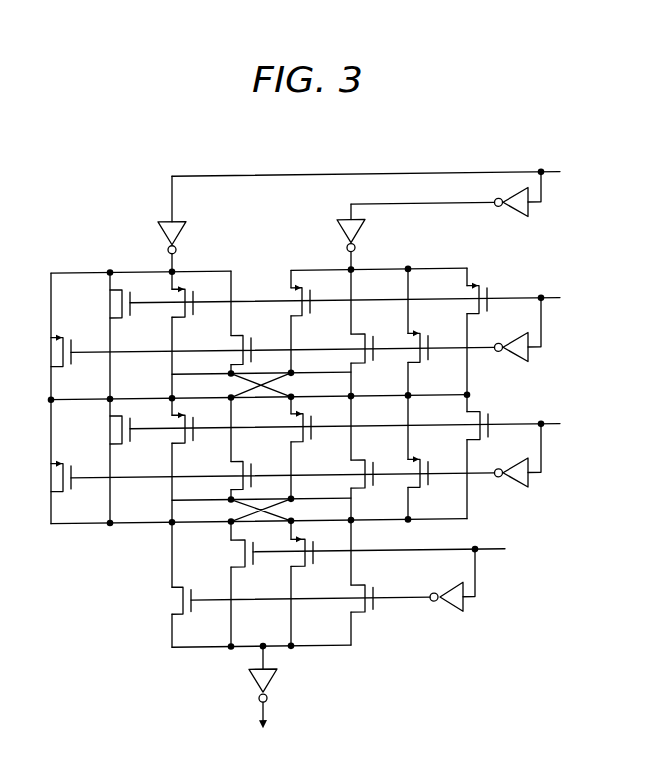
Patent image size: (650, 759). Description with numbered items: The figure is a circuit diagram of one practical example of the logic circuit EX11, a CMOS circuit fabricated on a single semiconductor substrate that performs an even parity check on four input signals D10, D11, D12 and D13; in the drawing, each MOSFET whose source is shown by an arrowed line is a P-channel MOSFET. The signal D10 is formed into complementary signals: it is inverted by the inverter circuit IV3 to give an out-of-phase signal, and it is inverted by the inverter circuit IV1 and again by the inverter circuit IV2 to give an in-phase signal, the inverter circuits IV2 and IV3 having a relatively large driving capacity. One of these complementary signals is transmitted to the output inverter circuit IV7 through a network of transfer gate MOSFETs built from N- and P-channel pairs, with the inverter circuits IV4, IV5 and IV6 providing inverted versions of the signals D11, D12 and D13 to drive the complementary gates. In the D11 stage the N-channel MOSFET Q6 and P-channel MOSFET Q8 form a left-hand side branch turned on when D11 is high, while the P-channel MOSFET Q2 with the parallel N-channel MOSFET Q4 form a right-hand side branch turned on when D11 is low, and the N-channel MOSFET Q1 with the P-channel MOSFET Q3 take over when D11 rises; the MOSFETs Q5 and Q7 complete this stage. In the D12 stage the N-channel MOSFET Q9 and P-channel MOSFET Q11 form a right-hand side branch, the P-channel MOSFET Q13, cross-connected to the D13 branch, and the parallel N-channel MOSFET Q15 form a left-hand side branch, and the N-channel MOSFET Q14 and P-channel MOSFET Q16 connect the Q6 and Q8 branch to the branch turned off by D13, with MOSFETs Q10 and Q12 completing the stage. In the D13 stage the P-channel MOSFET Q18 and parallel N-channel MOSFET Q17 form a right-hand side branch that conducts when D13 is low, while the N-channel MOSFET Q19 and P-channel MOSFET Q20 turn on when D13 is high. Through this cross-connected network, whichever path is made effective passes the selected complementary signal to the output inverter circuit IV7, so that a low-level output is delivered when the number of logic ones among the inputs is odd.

The N-channel MOSFET Q1 is at (492, 292).
The P-channel MOSFET Q2 is at (316, 294).
The P-channel MOSFET Q3 is at (433, 342).
The N-channel MOSFET Q4 is at (346, 342).
The MOSFET Q5 is at (197, 295).
The N-channel MOSFET Q6 is at (106, 305).
The MOSFET Q7 is at (256, 343).
The P-channel MOSFET Q8 is at (46, 350).
The N-channel MOSFET Q9 is at (463, 417).
The MOSFET Q10 is at (282, 420).
The P-channel MOSFET Q11 is at (435, 466).
The MOSFET Q12 is at (345, 466).
The P-channel MOSFET Q13 is at (200, 421).
The N-channel MOSFET Q14 is at (103, 430).
The N-channel MOSFET Q15 is at (259, 468).
The P-channel MOSFET Q16 is at (44, 476).
The N-channel MOSFET Q17 is at (381, 589).
The P-channel MOSFET Q18 is at (320, 546).
The N-channel MOSFET Q19 is at (226, 553).
The P-channel MOSFET Q20 is at (164, 601).
The inverter circuit IV1 is at (446, 208).
The inverter circuit IV2 is at (367, 237).
The inverter circuit IV3 is at (190, 224).
The inverter circuit IV4 is at (306, 343).
The inverter circuit IV5 is at (306, 471).
The inverter circuit IV6 is at (333, 594).
The output inverter circuit IV7 is at (279, 687).
The input signal D10 is at (385, 174).
The input signal D11 is at (364, 300).
The input signal D12 is at (364, 425).
The input signal D13 is at (397, 551).
The logic circuit EX11 is at (308, 445).